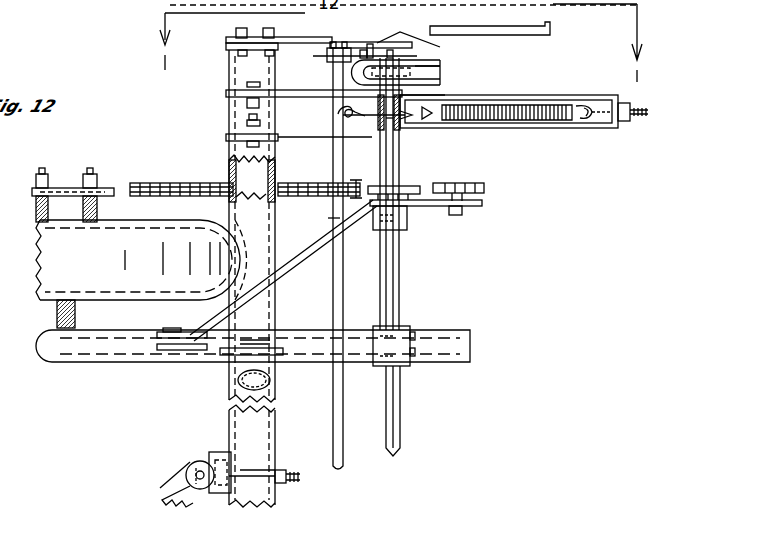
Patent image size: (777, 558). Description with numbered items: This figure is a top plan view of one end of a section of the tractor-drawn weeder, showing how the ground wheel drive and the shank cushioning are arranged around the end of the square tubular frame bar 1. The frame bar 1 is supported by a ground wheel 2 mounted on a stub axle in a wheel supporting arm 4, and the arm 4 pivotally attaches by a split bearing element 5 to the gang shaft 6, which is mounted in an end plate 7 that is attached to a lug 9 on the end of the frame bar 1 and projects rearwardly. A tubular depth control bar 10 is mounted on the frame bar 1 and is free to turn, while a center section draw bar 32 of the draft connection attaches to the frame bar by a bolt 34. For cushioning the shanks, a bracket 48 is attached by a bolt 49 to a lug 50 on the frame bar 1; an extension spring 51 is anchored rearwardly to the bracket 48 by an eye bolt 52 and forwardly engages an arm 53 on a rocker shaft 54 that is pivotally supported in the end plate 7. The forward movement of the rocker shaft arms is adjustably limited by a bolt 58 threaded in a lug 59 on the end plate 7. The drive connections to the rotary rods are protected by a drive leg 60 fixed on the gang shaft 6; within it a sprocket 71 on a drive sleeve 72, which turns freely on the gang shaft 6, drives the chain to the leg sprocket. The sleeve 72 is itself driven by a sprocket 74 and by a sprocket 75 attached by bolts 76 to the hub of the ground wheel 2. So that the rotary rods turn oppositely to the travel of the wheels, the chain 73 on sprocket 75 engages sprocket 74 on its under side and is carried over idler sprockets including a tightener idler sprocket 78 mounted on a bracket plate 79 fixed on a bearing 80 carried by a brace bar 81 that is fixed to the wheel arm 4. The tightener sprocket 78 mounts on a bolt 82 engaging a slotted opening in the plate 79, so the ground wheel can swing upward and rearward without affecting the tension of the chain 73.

The tubular frame bar 1 is at (276, 236).
The wheel 2 is at (130, 300).
The arm 4 is at (85, 365).
The split bearing element 5 is at (415, 344).
The gang shaft 6 is at (400, 386).
The end plate 7 is at (295, 37).
The lug 9 is at (229, 50).
The tubular depth control bar 10 is at (238, 386).
The center section draw bar 32 is at (172, 460).
The bolt 34 is at (208, 455).
The bracket 48 is at (556, 78).
The bolt 49 is at (259, 110).
The lug 50 is at (278, 92).
The extension spring 51 is at (527, 110).
The eye bolt 52 is at (594, 117).
The arm 53 is at (340, 118).
The rocker shaft 54 is at (330, 218).
The bolt 58 is at (370, 44).
The lug 59 is at (420, 32).
The drive leg 60 is at (432, 97).
The sprocket 71 is at (440, 71).
The drive sleeve 72 is at (400, 148).
The chain 73 is at (142, 183).
The sprocket 74 is at (420, 182).
The sprocket 75 is at (53, 180).
The bolt 76 is at (90, 180).
The tightener idler sprocket 78 is at (484, 188).
The bracket plate 79 is at (482, 205).
The bearing 80 is at (407, 228).
The brace bar 81 is at (283, 275).
The bolt 82 is at (462, 215).